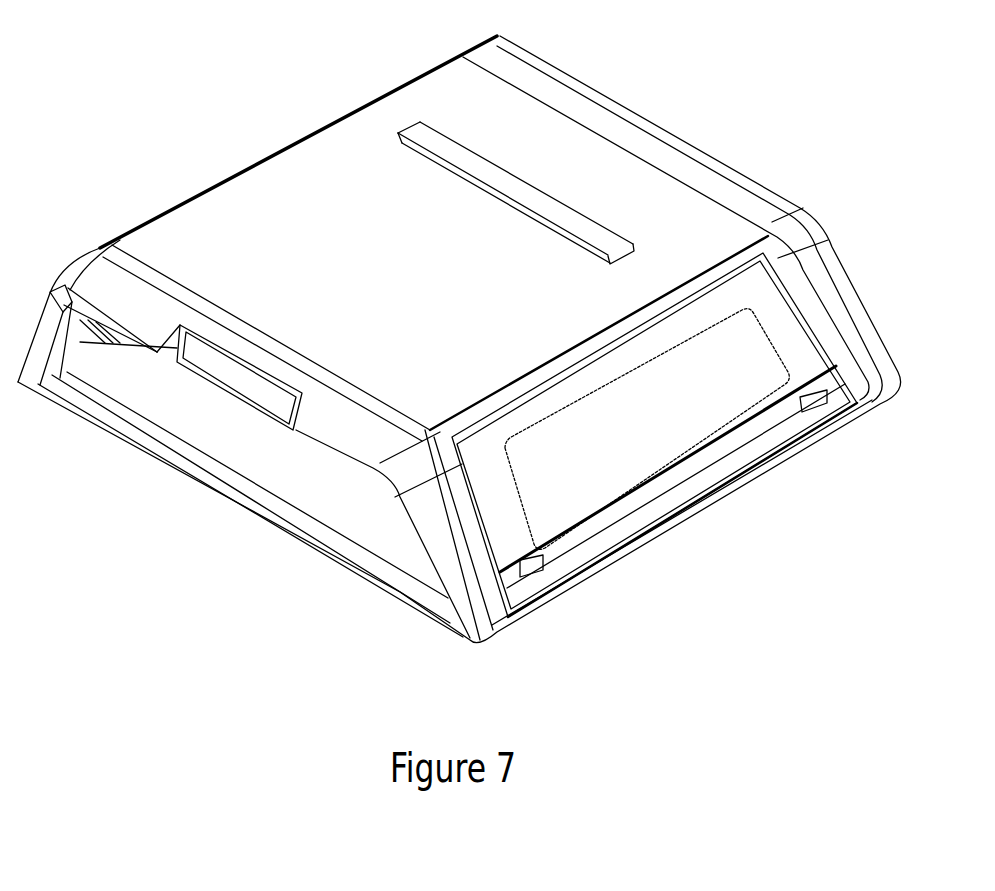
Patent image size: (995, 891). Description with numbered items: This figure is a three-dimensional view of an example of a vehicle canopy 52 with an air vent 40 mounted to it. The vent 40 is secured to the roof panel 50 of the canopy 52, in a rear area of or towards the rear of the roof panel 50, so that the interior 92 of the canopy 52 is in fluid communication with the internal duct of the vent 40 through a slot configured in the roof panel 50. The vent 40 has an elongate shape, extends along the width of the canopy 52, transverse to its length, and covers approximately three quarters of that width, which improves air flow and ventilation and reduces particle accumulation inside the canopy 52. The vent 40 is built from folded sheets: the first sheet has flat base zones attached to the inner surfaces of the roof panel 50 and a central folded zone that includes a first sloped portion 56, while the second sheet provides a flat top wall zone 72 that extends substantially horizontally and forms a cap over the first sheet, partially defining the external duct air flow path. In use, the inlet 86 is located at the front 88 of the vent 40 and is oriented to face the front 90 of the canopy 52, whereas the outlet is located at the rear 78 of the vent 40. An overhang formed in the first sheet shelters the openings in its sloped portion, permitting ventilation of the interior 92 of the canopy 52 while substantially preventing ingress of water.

The vehicle canopy 52 is at (459, 330).
The roof panel 50 is at (459, 339).
The air vent 40 is at (474, 161).
The flat top wall zone 72 is at (433, 143).
The rear of the vent 78 is at (550, 173).
The first sloped portion 56 is at (410, 145).
The inlet 86 is at (455, 176).
The front of the vent 88 is at (512, 218).
The front of the canopy 90 is at (167, 525).
The interior of the canopy 92 is at (332, 505).